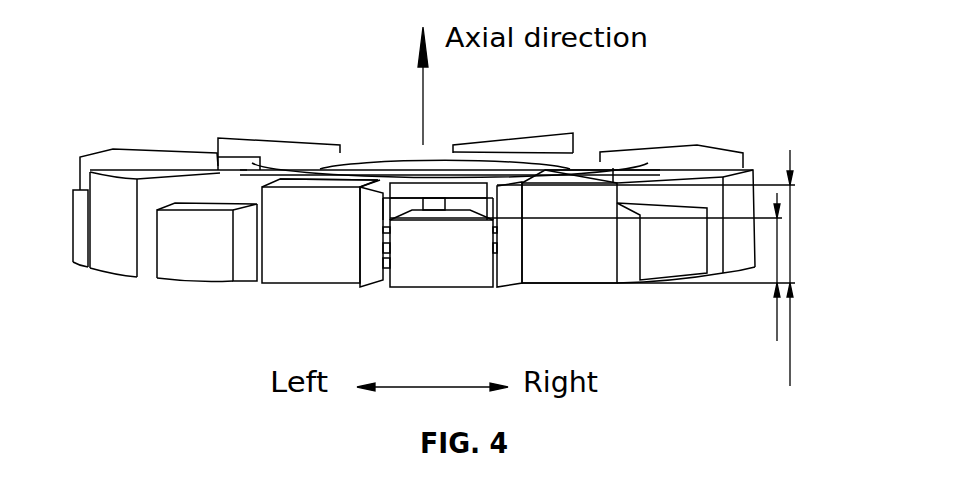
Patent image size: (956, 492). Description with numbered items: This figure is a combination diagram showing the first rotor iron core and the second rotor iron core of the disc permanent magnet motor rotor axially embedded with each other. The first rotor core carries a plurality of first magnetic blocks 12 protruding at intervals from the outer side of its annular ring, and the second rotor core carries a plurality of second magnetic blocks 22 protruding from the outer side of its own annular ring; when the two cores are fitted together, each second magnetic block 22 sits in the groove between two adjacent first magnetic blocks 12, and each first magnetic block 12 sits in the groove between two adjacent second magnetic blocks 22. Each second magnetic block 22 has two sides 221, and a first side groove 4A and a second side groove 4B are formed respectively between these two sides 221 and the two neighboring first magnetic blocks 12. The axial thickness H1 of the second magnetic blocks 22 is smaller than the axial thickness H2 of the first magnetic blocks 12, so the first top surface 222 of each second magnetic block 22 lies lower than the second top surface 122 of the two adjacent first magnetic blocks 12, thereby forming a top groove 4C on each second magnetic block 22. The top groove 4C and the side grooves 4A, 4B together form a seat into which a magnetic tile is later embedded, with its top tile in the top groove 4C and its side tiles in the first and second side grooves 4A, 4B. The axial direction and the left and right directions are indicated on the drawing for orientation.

The first magnetic block 12 is at (317, 250).
The second top surface 122 is at (347, 184).
The second magnetic block 22 is at (435, 270).
The side 221 is at (388, 283).
The first top surface 222 is at (449, 213).
The first side groove 4A is at (380, 263).
The second side groove 4B is at (503, 265).
The top groove 4C is at (426, 198).
The axial thickness of the second magnetic blocks H1 is at (777, 341).
The axial thickness of the first magnetic blocks H2 is at (790, 386).